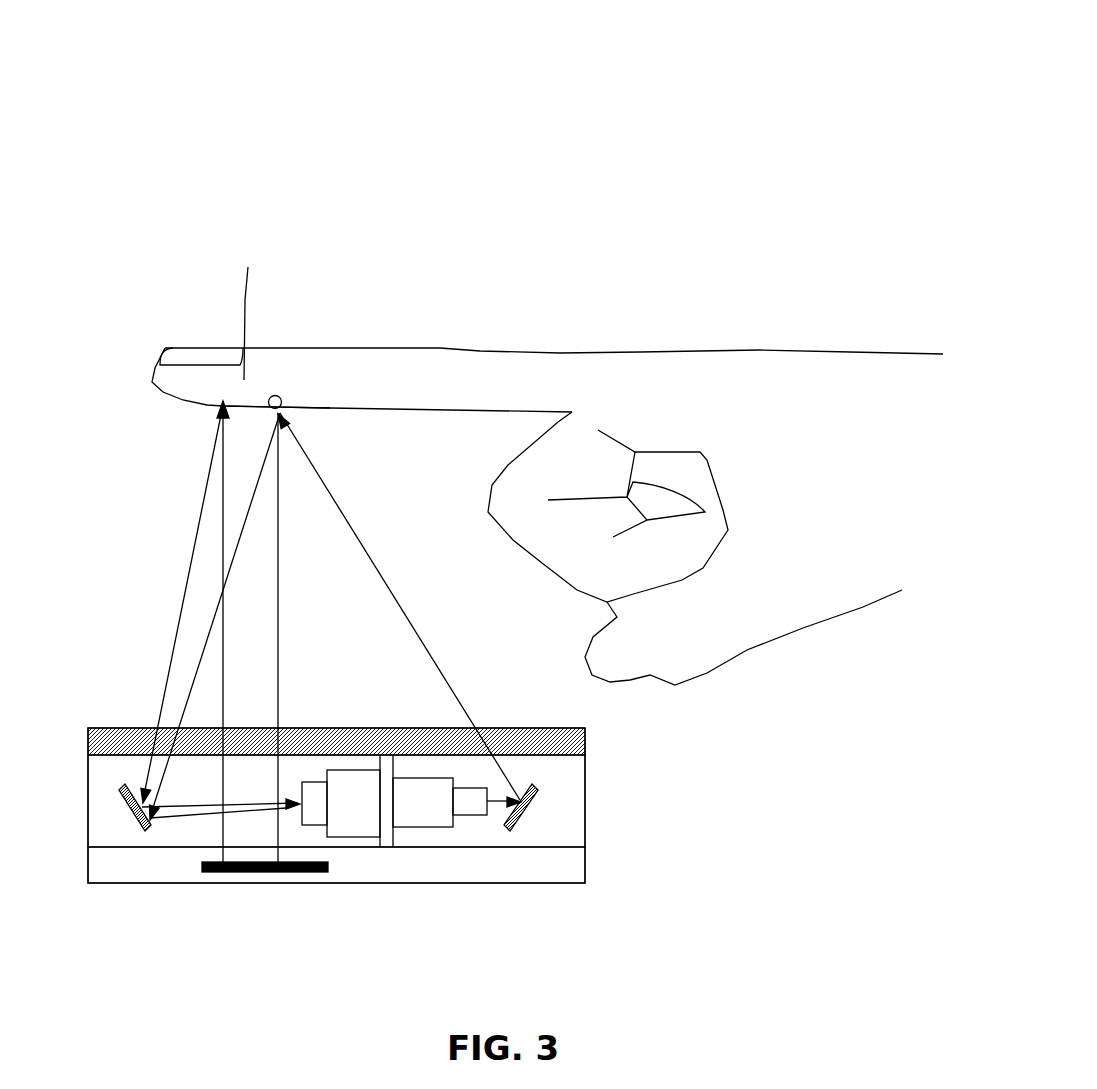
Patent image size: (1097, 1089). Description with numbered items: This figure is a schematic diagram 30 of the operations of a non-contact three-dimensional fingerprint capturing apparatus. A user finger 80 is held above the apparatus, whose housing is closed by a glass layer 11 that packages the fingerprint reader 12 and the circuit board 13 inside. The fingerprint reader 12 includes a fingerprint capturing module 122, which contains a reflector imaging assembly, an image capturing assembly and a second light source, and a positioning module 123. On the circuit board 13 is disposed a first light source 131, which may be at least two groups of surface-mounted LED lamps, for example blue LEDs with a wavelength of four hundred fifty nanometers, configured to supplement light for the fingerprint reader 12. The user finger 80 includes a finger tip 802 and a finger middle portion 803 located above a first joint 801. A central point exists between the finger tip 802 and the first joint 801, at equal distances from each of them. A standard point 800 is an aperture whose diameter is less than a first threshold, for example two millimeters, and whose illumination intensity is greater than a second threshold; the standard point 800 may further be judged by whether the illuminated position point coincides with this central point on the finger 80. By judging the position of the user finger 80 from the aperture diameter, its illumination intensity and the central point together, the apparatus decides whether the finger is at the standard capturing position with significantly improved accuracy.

The detection device 30 is at (127, 0).
The user finger 80 is at (328, 372).
The standard point 800 is at (280, 400).
The first joint 801 is at (330, 408).
The finger tip 802 is at (175, 350).
The finger middle portion 803 is at (248, 267).
The glass layer 11 is at (592, 748).
The fingerprint reader 12 is at (592, 806).
The circuit board 13 is at (592, 871).
The fingerprint capturing module 122 is at (367, 843).
The positioning module 123 is at (423, 827).
The first light source 131 is at (245, 872).